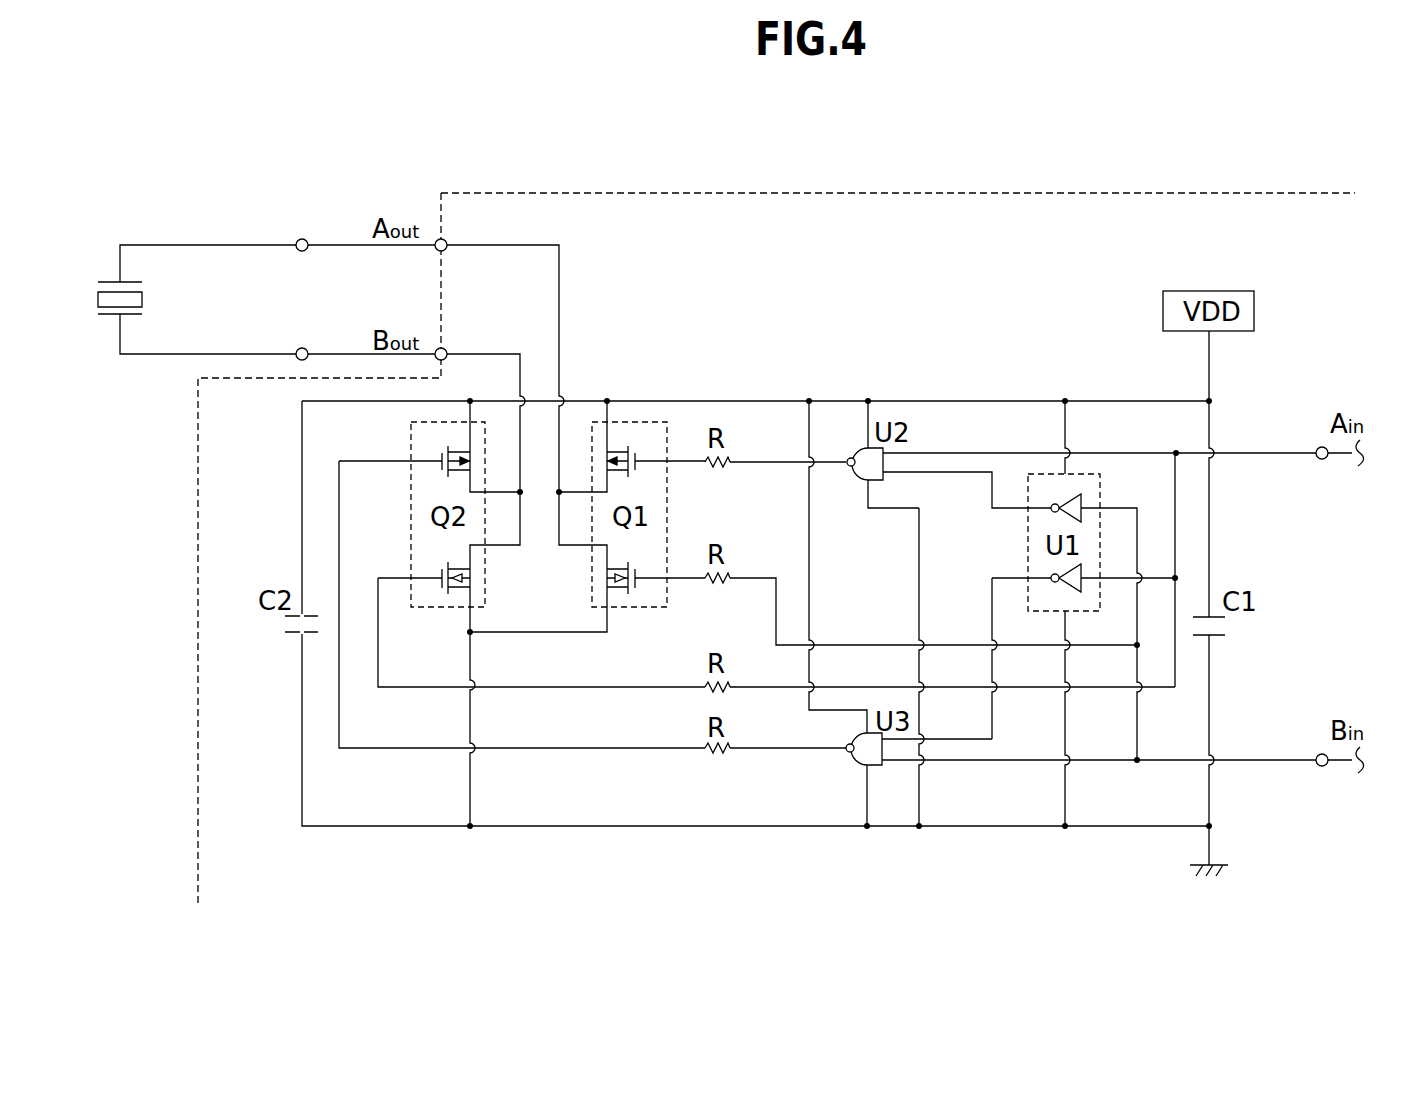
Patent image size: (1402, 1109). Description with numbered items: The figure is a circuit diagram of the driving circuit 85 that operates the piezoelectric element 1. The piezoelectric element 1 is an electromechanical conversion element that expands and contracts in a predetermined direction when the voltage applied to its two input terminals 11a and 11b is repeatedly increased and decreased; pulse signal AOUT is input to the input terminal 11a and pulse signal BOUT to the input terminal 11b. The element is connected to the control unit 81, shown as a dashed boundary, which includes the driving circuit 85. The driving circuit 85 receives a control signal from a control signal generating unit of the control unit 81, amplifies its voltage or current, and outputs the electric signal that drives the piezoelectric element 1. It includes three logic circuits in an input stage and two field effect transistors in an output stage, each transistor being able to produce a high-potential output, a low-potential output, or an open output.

The piezoelectric element 1 is at (97, 296).
The input terminal 11a is at (302, 238).
The input terminal 11b is at (302, 347).
The control unit 81 is at (1180, 192).
The driving circuit 85 is at (1040, 294).